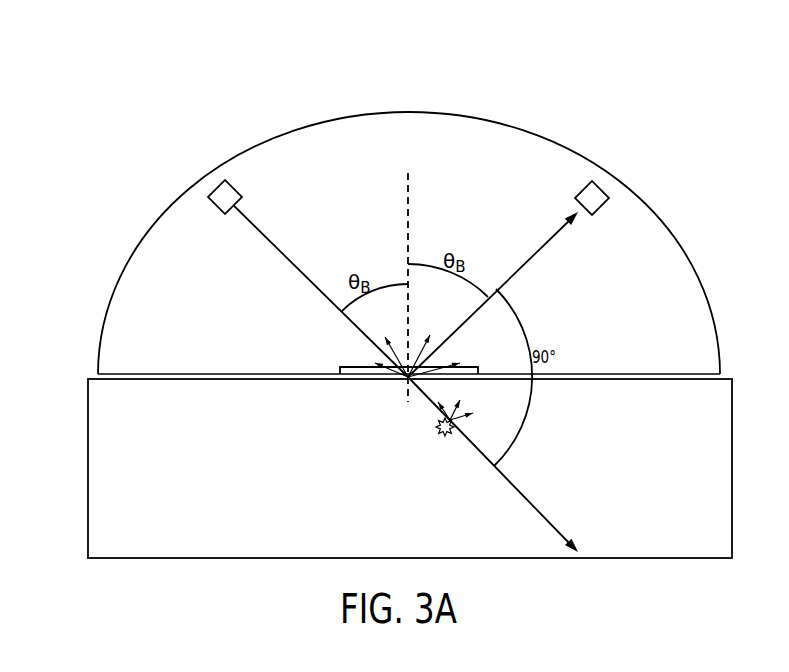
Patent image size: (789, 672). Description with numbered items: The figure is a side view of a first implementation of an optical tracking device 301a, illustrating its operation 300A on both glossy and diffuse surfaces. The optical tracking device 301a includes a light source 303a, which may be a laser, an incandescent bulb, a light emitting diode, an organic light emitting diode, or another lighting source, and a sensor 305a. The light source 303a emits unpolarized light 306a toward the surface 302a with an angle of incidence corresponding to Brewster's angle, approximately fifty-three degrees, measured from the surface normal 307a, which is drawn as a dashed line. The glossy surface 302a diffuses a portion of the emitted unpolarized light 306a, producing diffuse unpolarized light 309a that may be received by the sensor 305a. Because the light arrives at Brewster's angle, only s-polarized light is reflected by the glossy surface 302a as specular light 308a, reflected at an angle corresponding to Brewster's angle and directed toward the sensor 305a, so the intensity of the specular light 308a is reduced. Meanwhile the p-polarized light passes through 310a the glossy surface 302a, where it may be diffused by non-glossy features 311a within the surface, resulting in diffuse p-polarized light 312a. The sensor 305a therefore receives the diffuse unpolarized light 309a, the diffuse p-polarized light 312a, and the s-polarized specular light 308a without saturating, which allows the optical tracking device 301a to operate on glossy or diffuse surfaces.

The operation 300A is at (182, 69).
The optical tracking device 301a is at (152, 217).
The surface 302a is at (142, 378).
The light source 303a is at (212, 188).
The sensor 305a is at (607, 206).
The unpolarized light 306a is at (293, 267).
The surface normal 307a is at (404, 243).
The specular light 308a is at (535, 253).
The diffuse unpolarized light 309a is at (422, 386).
The p-polarized light passing through 310a is at (508, 483).
The non-glossy features 311a is at (440, 432).
The diffuse p-polarized light 312a is at (450, 419).